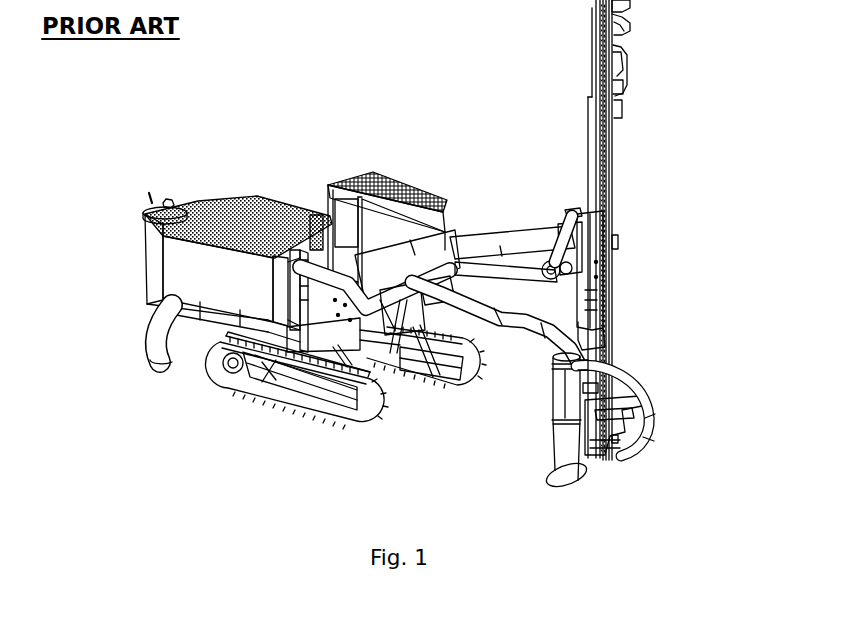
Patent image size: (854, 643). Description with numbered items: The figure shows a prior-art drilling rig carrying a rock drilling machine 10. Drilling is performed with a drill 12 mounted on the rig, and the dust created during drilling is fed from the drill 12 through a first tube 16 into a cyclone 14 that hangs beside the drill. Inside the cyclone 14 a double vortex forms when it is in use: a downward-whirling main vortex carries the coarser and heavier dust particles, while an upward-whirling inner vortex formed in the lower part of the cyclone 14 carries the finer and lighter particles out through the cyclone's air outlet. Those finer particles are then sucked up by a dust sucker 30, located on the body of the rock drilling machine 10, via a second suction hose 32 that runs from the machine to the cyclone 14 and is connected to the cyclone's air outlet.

The rock drilling machine 10 is at (368, 95).
The drill 12 is at (613, 343).
The cyclone 14 is at (570, 378).
The first tube 16 is at (658, 425).
The dust sucker 30 is at (138, 212).
The second suction hose 32 is at (512, 320).